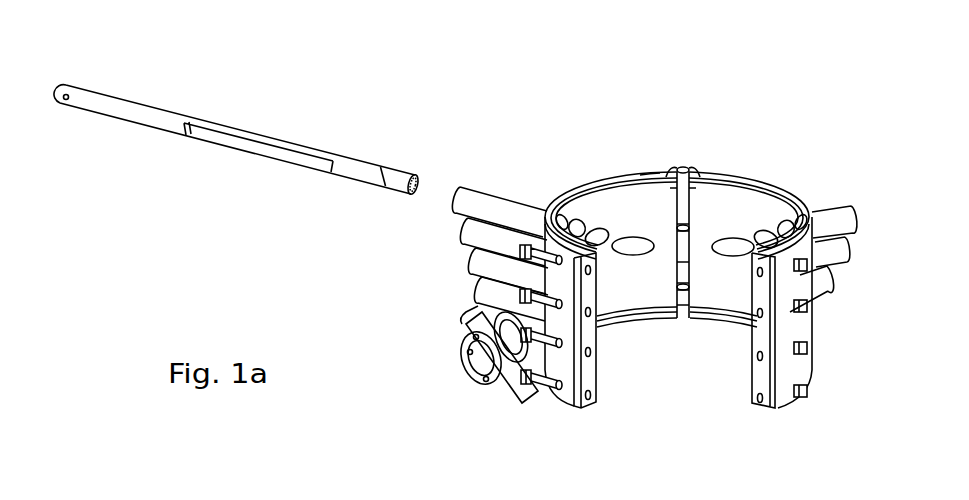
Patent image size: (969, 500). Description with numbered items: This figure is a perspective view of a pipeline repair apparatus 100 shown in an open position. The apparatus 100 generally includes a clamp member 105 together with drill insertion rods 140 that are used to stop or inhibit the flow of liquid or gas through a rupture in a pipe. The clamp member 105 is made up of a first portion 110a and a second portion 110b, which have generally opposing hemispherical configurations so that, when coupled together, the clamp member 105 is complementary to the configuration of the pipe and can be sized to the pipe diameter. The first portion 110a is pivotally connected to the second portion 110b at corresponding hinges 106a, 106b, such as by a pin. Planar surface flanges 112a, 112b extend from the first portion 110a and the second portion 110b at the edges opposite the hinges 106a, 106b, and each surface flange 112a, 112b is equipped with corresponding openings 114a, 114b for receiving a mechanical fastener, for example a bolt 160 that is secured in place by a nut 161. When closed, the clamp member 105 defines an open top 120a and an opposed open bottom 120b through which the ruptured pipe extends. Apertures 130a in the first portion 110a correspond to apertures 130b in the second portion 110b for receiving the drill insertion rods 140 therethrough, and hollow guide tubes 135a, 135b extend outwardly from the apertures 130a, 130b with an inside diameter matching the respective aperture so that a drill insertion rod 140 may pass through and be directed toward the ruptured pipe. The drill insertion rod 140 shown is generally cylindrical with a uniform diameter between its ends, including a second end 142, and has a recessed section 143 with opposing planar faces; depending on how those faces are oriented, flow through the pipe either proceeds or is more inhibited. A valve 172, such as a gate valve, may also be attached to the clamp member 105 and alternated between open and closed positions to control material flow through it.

The apparatus 100 is at (610, 250).
The clamp member 105 is at (711, 157).
The hinge 106a is at (674, 206).
The hinge 106b is at (690, 176).
The first portion 110a is at (607, 292).
The second portion 110b is at (773, 292).
The surface flange 112a is at (617, 356).
The surface flange 112b is at (737, 356).
The openings 114a is at (635, 368).
The openings 114b is at (760, 405).
The open top 120a is at (646, 157).
The open bottom 120b is at (678, 419).
The apertures 130a is at (636, 255).
The apertures 130b is at (728, 256).
The guide tubes 135a is at (475, 206).
The guide tubes 135b is at (832, 214).
The drill insertion rod 140 is at (270, 131).
The second end 142 is at (415, 180).
The recessed section 143 is at (245, 132).
The bolt 160 is at (454, 374).
The nut 161 is at (805, 397).
The valve 172 is at (448, 372).